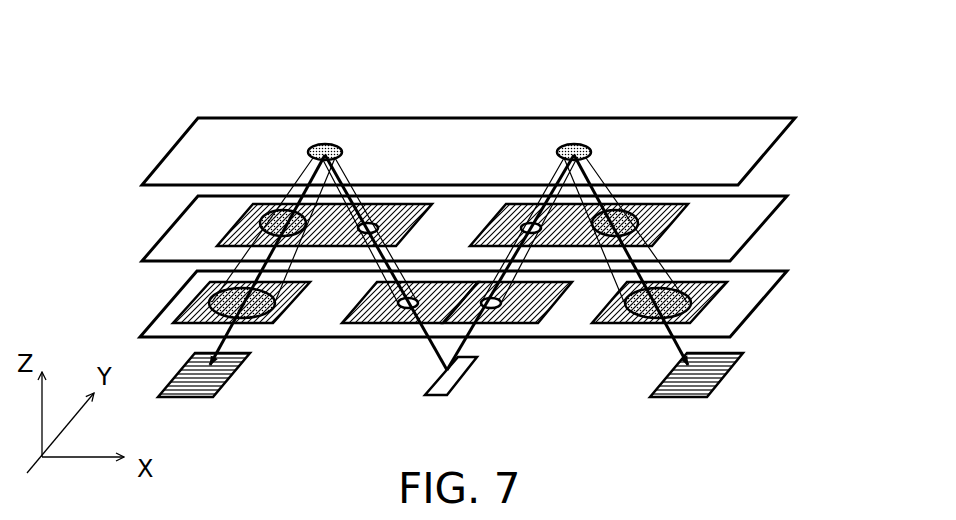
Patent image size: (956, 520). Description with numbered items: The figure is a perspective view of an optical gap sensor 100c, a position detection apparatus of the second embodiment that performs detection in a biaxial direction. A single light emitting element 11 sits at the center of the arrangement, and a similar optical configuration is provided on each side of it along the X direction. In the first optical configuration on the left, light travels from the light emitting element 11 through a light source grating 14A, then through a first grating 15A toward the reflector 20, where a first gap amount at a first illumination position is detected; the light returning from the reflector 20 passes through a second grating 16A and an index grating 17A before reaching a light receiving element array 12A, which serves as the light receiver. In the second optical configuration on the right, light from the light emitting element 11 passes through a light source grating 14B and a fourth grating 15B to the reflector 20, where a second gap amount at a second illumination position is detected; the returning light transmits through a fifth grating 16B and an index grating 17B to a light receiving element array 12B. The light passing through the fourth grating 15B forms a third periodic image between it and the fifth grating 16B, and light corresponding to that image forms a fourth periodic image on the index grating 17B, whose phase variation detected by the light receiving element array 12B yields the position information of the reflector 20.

The optical gap sensor 100c is at (842, 56).
The reflector 20 is at (180, 140).
The first grating 15A is at (393, 203).
The fourth grating 15B is at (508, 204).
The second grating 16A is at (233, 232).
The fifth grating 16B is at (700, 217).
The index grating 17A is at (187, 297).
The index grating 17B is at (720, 300).
The light source grating 14A is at (345, 330).
The light source grating 14B is at (547, 322).
The light receiving element array 12A is at (182, 397).
The light receiving element array 12B is at (723, 382).
The light emitting element 11 is at (453, 390).